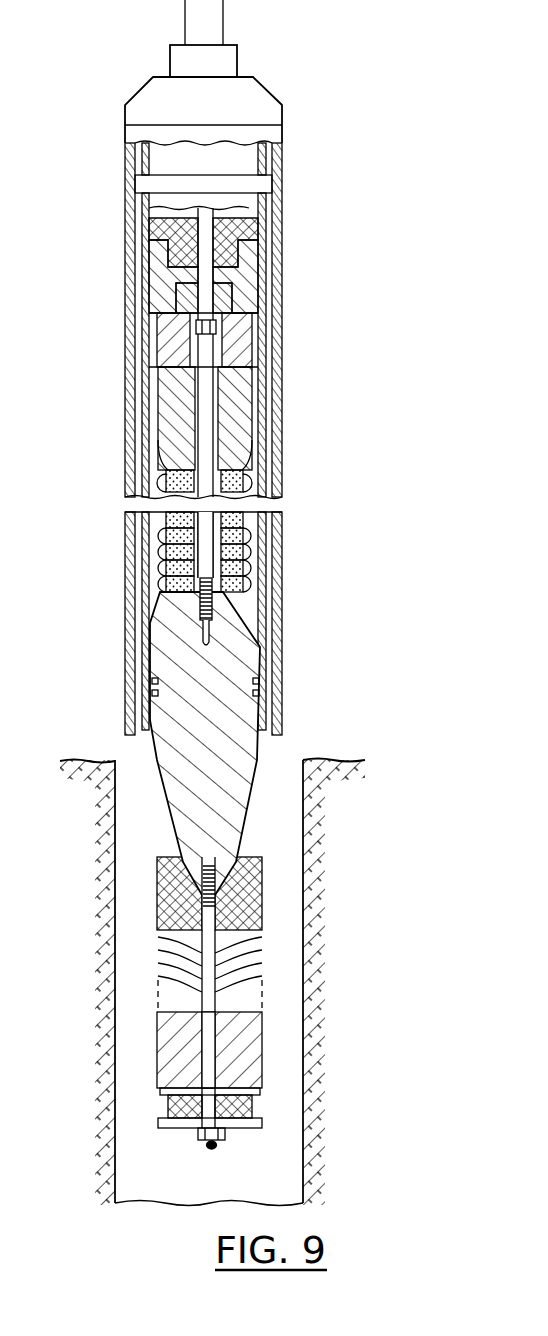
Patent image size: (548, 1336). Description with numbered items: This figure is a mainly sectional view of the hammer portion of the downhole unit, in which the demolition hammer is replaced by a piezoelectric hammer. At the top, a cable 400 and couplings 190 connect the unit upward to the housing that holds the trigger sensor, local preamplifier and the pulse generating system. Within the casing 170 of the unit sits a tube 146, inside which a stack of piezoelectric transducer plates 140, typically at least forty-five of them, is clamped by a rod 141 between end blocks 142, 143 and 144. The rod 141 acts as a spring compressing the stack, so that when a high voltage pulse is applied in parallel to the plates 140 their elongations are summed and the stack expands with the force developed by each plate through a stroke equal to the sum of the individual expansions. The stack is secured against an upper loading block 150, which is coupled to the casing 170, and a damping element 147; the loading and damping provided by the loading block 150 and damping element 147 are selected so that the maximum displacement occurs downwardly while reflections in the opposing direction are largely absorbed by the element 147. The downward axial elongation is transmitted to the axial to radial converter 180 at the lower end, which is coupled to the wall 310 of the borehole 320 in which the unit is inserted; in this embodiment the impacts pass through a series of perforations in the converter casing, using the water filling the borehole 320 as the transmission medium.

The cable 400 is at (262, 14).
The couplings 190 is at (267, 115).
The damping element 147 is at (242, 228).
The tube 146 is at (260, 262).
The loading block 150 is at (238, 300).
The end block 142 is at (243, 343).
The end block 143 is at (237, 398).
The rod 141 is at (205, 435).
The piezoelectric transducer plates 140 is at (237, 550).
The casing 170 is at (280, 585).
The end block 144 is at (243, 648).
The borehole 320 is at (290, 806).
The wall of the borehole 310 is at (313, 848).
The axial to radial converter 180 is at (257, 898).